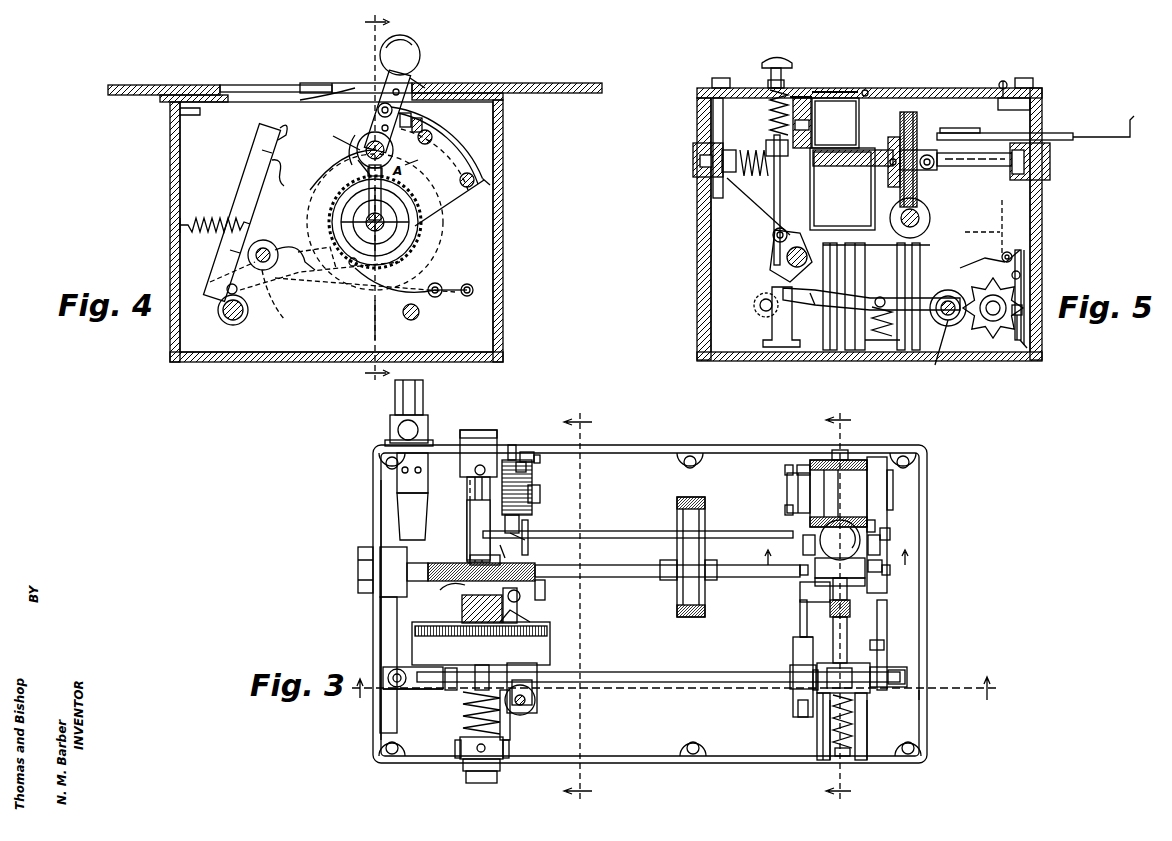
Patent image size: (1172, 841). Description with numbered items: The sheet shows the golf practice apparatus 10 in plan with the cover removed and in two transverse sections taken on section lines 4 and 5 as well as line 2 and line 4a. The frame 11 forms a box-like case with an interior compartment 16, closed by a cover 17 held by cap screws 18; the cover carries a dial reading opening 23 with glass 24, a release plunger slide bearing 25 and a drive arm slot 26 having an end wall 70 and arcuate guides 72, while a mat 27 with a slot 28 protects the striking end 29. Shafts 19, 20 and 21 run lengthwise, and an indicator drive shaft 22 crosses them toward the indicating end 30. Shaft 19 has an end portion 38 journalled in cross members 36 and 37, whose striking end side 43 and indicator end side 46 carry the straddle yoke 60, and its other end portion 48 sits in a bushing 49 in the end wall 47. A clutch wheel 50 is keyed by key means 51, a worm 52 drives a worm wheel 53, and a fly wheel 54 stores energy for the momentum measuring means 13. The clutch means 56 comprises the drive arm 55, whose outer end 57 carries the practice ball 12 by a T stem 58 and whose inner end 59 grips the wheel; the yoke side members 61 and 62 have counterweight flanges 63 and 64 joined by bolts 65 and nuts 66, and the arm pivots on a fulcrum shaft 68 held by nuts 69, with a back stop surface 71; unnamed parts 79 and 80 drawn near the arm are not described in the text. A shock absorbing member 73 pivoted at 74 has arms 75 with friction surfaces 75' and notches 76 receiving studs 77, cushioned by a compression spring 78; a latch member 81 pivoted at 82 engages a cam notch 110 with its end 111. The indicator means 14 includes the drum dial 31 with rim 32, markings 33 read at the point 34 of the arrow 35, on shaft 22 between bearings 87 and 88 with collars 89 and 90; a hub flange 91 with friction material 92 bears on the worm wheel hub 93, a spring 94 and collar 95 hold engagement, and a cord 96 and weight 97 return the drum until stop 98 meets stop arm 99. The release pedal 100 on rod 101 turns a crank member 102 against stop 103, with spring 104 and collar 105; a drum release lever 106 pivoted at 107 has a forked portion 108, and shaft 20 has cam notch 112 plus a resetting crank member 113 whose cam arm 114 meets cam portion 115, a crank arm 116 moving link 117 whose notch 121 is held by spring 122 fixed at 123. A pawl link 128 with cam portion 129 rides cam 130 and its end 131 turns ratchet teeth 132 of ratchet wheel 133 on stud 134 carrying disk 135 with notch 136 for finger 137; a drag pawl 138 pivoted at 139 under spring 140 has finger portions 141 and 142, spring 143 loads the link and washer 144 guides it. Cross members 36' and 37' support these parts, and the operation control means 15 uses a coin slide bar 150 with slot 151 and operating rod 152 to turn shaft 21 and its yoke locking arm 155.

In FIG. 4, the apparatus for golf practice 10 is at (245, 363).
In FIG. 5, the apparatus for golf practice 10 is at (978, 362).
In FIG. 3, the apparatus for golf practice 10 is at (660, 765).
In FIG. 4, the frame 11 is at (504, 257).
In FIG. 5, the frame 11 is at (697, 266).
In FIG. 3, the frame 11 is at (928, 686).
In FIG. 4, the practice ball 12 is at (420, 52).
In FIG. 3, the practice ball 12 is at (840, 540).
In FIG. 4, the momentum measuring means 13 is at (455, 208).
In FIG. 3, the momentum measuring means 13 is at (797, 498).
In FIG. 5, the indicator means 14 is at (800, 95).
In FIG. 3, the indicator means 14 is at (410, 620).
In FIG. 5, the operation control means 15 is at (1060, 132).
In FIG. 3, the operation control means 15 is at (428, 425).
In FIG. 4, the interior compartment 16 is at (336, 227).
In FIG. 5, the interior compartment 16 is at (870, 225).
In FIG. 3, the interior compartment 16 is at (650, 604).
In FIG. 4, the cover 17 is at (200, 103).
In FIG. 5, the cover 17 is at (948, 88).
In FIG. 5, the cap screws 18 is at (1028, 78).
In FIG. 4, the shaft 19 is at (405, 212).
In FIG. 5, the shaft 19 is at (930, 212).
In FIG. 3, the shaft 19 is at (727, 577).
In FIG. 4, the practice ball release and resetting shaft 20 is at (295, 249).
In FIG. 5, the practice ball release and resetting shaft 20 is at (871, 278).
In FIG. 3, the practice ball release and resetting shaft 20 is at (645, 682).
In FIG. 4, the lock and release shaft 21 is at (416, 318).
In FIG. 5, the lock and release shaft 21 is at (945, 312).
In FIG. 3, the lock and release shaft 21 is at (640, 531).
In FIG. 5, the indicator drive shaft 22 is at (968, 167).
In FIG. 3, the indicator drive shaft 22 is at (478, 512).
In FIG. 5, the indicator dial reading opening 23 is at (811, 108).
In FIG. 5, the plate of glass 24 is at (826, 90).
In FIG. 5, the release plunger slide bearing 25 is at (768, 118).
In FIG. 4, the practice ball and drive arm slot 26 is at (272, 92).
In FIG. 4, the mat 27 is at (515, 90).
In FIG. 4, the mat slot 28 is at (349, 90).
In FIG. 3, the striking end 29 is at (928, 590).
In FIG. 3, the indicating end 30 is at (373, 517).
In FIG. 5, the indicator drum dial 31 is at (859, 108).
In FIG. 3, the indicator drum dial 31 is at (550, 648).
In FIG. 5, the dial rim 32 is at (843, 90).
In FIG. 3, the dial rim 32 is at (415, 630).
In FIG. 3, the calibrated indicator markings 33 is at (530, 618).
In FIG. 5, the point 34 is at (867, 90).
In FIG. 5, the indicator reading arrow 35 is at (900, 88).
In FIG. 3, the cross member 36 is at (875, 726).
In FIG. 5, the cross member 36' is at (730, 175).
In FIG. 3, the cross member 36' is at (522, 761).
In FIG. 4, the cross member 37 is at (364, 320).
In FIG. 3, the cross member 37 is at (810, 730).
In FIG. 5, the cross member 37' is at (844, 288).
In FIG. 3, the cross member 37' is at (442, 761).
In FIG. 3, the end portion 38 is at (890, 532).
In FIG. 3, the striking end side 43 is at (867, 722).
In FIG. 3, the indicator end side 46 is at (817, 728).
In FIG. 4, the end wall 47 is at (212, 122).
In FIG. 5, the end wall 47 is at (998, 105).
In FIG. 3, the end wall 47 is at (375, 618).
In FIG. 3, the other end portion 48 is at (425, 570).
In FIG. 5, the bushing 49 is at (876, 296).
In FIG. 4, the clutch wheel 50 is at (425, 160).
In FIG. 3, the clutch wheel 50 is at (842, 631).
In FIG. 4, the key means 51 is at (364, 220).
In FIG. 5, the worm 52 is at (919, 222).
In FIG. 5, the worm wheel 53 is at (932, 170).
In FIG. 3, the worm wheel 53 is at (535, 585).
In FIG. 4, the fly wheel 54 is at (333, 170).
In FIG. 3, the fly wheel 54 is at (695, 500).
In FIG. 4, the drive arm 55 is at (355, 133).
In FIG. 3, the drive arm 55 is at (850, 585).
In FIG. 4, the clutch means 56 is at (358, 162).
In FIG. 3, the clutch means 56 is at (815, 582).
In FIG. 4, the outer end 57 is at (380, 80).
In FIG. 4, the T stem 58 is at (418, 80).
In FIG. 4, the inner end 59 is at (367, 172).
In FIG. 4, the straddle yoke 60 is at (478, 158).
In FIG. 3, the straddle yoke 60 is at (800, 598).
In FIG. 3, the side member 61 is at (887, 503).
In FIG. 4, the side member 62 is at (450, 222).
In FIG. 3, the side member 62 is at (790, 485).
In FIG. 3, the arcuate counterweight flange 63 is at (838, 493).
In FIG. 4, the arcuate counterweight flange 64 is at (486, 180).
In FIG. 3, the arcuate counterweight flange 64 is at (823, 493).
In FIG. 4, the bolts 65 is at (464, 174).
In FIG. 3, the bolts 65 is at (800, 466).
In FIG. 3, the nuts 66 is at (832, 455).
In FIG. 4, the fulcrum shaft 68 is at (357, 150).
In FIG. 3, the fulcrum shaft 68 is at (812, 560).
In FIG. 3, the nuts 69 is at (800, 570).
In FIG. 4, the end wall 70 is at (412, 116).
In FIG. 4, the back stop surface 71 is at (392, 88).
In FIG. 3, the back stop surface 71 is at (882, 565).
In FIG. 4, the arcuate guides 72 is at (327, 97).
In FIG. 4, the shock absorbing member 73 is at (262, 248).
In FIG. 3, the shock absorbing member 73 is at (813, 688).
In FIG. 4, the pivot 74 is at (240, 320).
In FIG. 4, the arms 75 is at (242, 213).
In FIG. 3, the arms 75 is at (843, 670).
In FIG. 4, the friction surfaces 75' is at (269, 123).
In FIG. 4, the notches 76 is at (288, 165).
In FIG. 4, the cylindrical studs 77 is at (378, 112).
In FIG. 3, the cylindrical studs 77 is at (842, 544).
In FIG. 4, the compression spring 78 is at (208, 218).
In FIG. 3, the compression spring 78 is at (862, 750).
In FIG. 4, the pin 79 is at (431, 138).
In FIG. 3, the pin 79 is at (878, 524).
In FIG. 4, the stop 80 is at (423, 124).
In FIG. 3, the latch member 81 is at (887, 615).
In FIG. 3, the pivot 82 is at (885, 645).
In FIG. 5, the bearing 87 is at (1050, 176).
In FIG. 3, the bearing 87 is at (486, 430).
In FIG. 5, the bearing 88 is at (695, 177).
In FIG. 3, the bearing 88 is at (481, 783).
In FIG. 5, the collar 89 is at (1014, 172).
In FIG. 3, the collar 89 is at (470, 445).
In FIG. 5, the collar 90 is at (755, 206).
In FIG. 3, the collar 90 is at (516, 719).
In FIG. 5, the hub flange 91 is at (890, 148).
In FIG. 3, the hub flange 91 is at (516, 599).
In FIG. 5, the friction material 92 is at (893, 137).
In FIG. 3, the friction material 92 is at (450, 578).
In FIG. 5, the hub 93 is at (900, 190).
In FIG. 3, the hub 93 is at (514, 601).
In FIG. 5, the compression spring 94 is at (750, 176).
In FIG. 3, the compression spring 94 is at (465, 722).
In FIG. 5, the collar 95 is at (775, 195).
In FIG. 3, the collar 95 is at (474, 684).
In FIG. 5, the cord 96 is at (872, 214).
In FIG. 3, the cord 96 is at (475, 609).
In FIG. 5, the weight 97 is at (876, 342).
In FIG. 3, the weight 97 is at (440, 595).
In FIG. 3, the stop 98 is at (404, 668).
In FIG. 3, the stop arm 99 is at (428, 690).
In FIG. 5, the release pedal 100 is at (777, 58).
In FIG. 5, the release plunger rod 101 is at (781, 200).
In FIG. 3, the release plunger rod 101 is at (530, 712).
In FIG. 5, the crank member 102 is at (772, 262).
In FIG. 3, the crank member 102 is at (538, 690).
In FIG. 5, the stop 103 is at (772, 328).
In FIG. 5, the spring 104 is at (809, 124).
In FIG. 5, the collar 105 is at (740, 150).
In FIG. 5, the drum release lever 106 is at (773, 220).
In FIG. 5, the pivot 107 is at (754, 304).
In FIG. 5, the forked portion 108 is at (835, 150).
In FIG. 3, the forked portion 108 is at (448, 684).
In FIG. 3, the cam notch 110 is at (907, 677).
In FIG. 3, the end 111 is at (885, 675).
In FIG. 4, the cam notch 112 is at (292, 300).
In FIG. 4, the resetting crank member 113 is at (279, 301).
In FIG. 3, the resetting crank member 113 is at (790, 666).
In FIG. 3, the cam arm 114 is at (793, 650).
In FIG. 4, the cam portion 115 is at (331, 139).
In FIG. 3, the cam portion 115 is at (800, 612).
In FIG. 4, the crank arm 116 is at (225, 278).
In FIG. 3, the crank arm 116 is at (800, 708).
In FIG. 4, the yoke resetting link 117 is at (340, 292).
In FIG. 3, the yoke resetting link 117 is at (800, 626).
In FIG. 4, the notch 121 is at (349, 263).
In FIG. 4, the spring 122 is at (386, 295).
In FIG. 3, the spring 122 is at (786, 511).
In FIG. 4, the attachment point 123 is at (465, 297).
In FIG. 3, the attachment point 123 is at (785, 470).
In FIG. 5, the pawl link 128 is at (812, 302).
In FIG. 3, the pawl link 128 is at (505, 556).
In FIG. 5, the cam portion 129 is at (918, 296).
In FIG. 3, the cam portion 129 is at (529, 530).
In FIG. 5, the cam 130 is at (933, 316).
In FIG. 3, the cam 130 is at (500, 545).
In FIG. 5, the end 131 is at (976, 257).
In FIG. 5, the ratchet teeth 132 is at (983, 318).
In FIG. 5, the ratchet wheel 133 is at (1000, 335).
In FIG. 3, the ratchet wheel 133 is at (532, 478).
In FIG. 5, the stud 134 is at (1021, 270).
In FIG. 3, the stud 134 is at (527, 452).
In FIG. 5, the disk 135 is at (1030, 345).
In FIG. 3, the disk 135 is at (502, 500).
In FIG. 5, the notch 136 is at (1002, 258).
In FIG. 3, the notch 136 is at (540, 492).
In FIG. 3, the finger 137 is at (520, 520).
In FIG. 5, the drag pawl 138 is at (1020, 272).
In FIG. 3, the drag pawl 138 is at (534, 460).
In FIG. 5, the pivot 139 is at (1015, 255).
In FIG. 3, the pivot 139 is at (512, 445).
In FIG. 5, the spring 140 is at (1024, 290).
In FIG. 3, the spring 140 is at (538, 455).
In FIG. 5, the finger portion 141 is at (1022, 312).
In FIG. 5, the finger portion 142 is at (1022, 325).
In FIG. 5, the spring 143 is at (868, 340).
In FIG. 4, the washer 144 is at (317, 249).
In FIG. 5, the washer 144 is at (937, 352).
In FIG. 3, the washer 144 is at (530, 545).
In FIG. 5, the coin slide bar 150 is at (1095, 135).
In FIG. 3, the coin slide bar 150 is at (395, 398).
In FIG. 3, the slot 151 is at (398, 432).
In FIG. 5, the operating rod 152 is at (983, 227).
In FIG. 3, the yoke locking arm 155 is at (895, 485).
In FIG. 3, the section line 2 is at (674, 699).
In FIG. 3, the section line 4 is at (830, 607).
In FIG. 4, the section line 4a is at (387, 198).
In FIG. 3, the section line 4a is at (837, 552).
In FIG. 3, the section line 5 is at (571, 606).